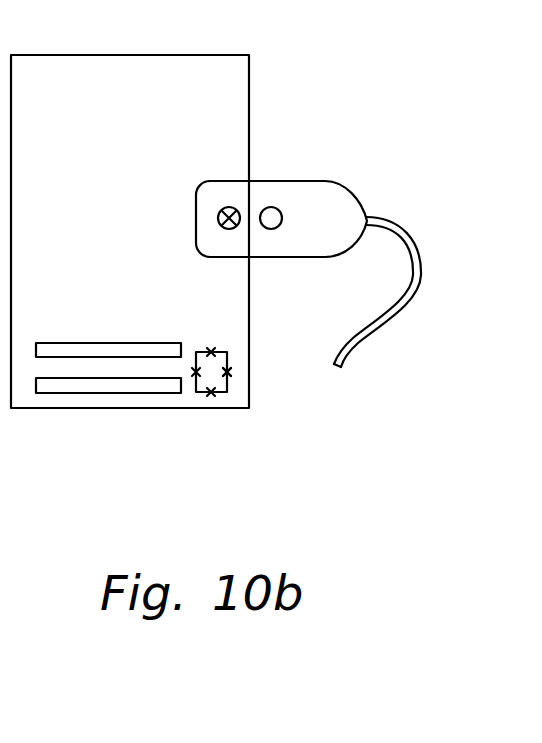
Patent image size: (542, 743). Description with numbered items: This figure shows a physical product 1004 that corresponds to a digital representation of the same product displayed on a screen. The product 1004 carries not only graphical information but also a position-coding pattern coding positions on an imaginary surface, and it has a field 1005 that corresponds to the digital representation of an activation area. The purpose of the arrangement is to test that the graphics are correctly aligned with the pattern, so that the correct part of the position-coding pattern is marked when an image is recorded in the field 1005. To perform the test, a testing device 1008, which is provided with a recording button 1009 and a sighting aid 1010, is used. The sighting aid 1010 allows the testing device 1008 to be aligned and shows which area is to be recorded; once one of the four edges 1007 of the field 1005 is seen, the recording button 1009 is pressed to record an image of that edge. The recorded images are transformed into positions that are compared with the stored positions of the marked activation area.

The product 1004 is at (249, 86).
The field 1005 is at (229, 382).
The edges 1007 is at (215, 396).
The testing device 1008 is at (316, 240).
The recording button 1009 is at (275, 212).
The sighting aid 1010 is at (277, 258).